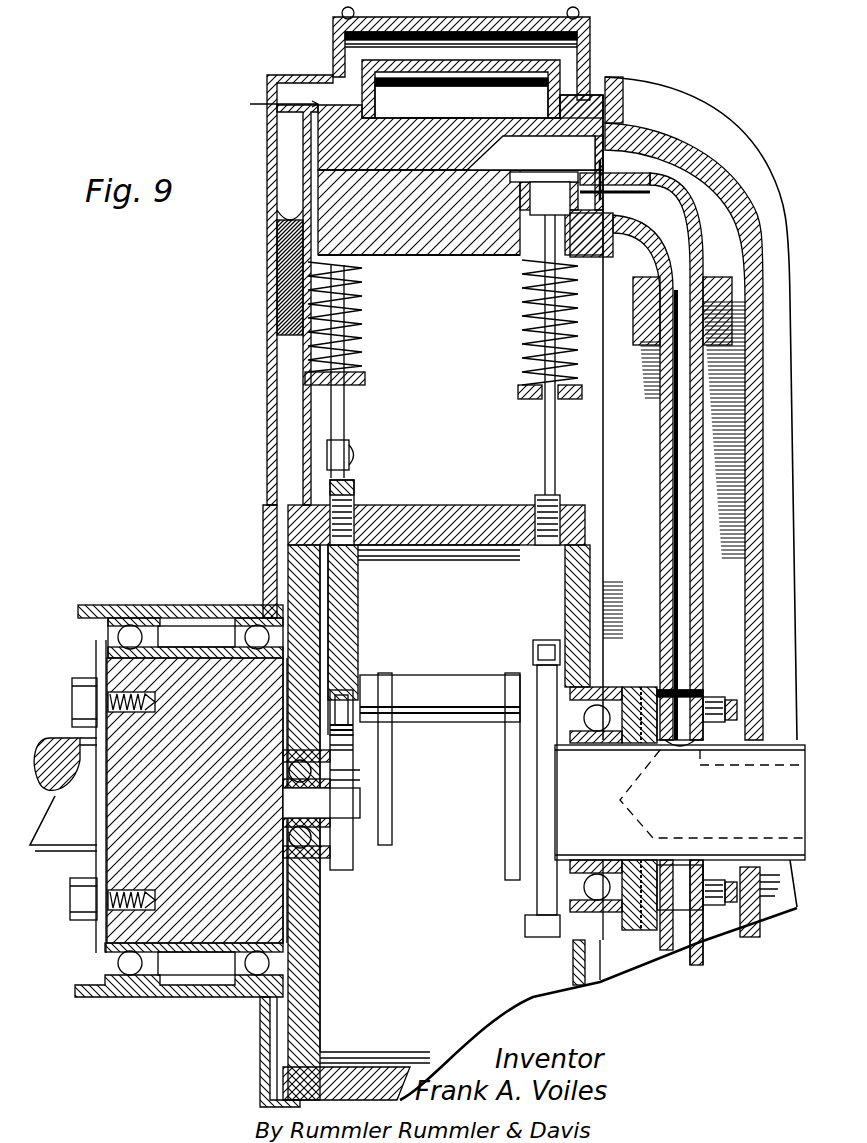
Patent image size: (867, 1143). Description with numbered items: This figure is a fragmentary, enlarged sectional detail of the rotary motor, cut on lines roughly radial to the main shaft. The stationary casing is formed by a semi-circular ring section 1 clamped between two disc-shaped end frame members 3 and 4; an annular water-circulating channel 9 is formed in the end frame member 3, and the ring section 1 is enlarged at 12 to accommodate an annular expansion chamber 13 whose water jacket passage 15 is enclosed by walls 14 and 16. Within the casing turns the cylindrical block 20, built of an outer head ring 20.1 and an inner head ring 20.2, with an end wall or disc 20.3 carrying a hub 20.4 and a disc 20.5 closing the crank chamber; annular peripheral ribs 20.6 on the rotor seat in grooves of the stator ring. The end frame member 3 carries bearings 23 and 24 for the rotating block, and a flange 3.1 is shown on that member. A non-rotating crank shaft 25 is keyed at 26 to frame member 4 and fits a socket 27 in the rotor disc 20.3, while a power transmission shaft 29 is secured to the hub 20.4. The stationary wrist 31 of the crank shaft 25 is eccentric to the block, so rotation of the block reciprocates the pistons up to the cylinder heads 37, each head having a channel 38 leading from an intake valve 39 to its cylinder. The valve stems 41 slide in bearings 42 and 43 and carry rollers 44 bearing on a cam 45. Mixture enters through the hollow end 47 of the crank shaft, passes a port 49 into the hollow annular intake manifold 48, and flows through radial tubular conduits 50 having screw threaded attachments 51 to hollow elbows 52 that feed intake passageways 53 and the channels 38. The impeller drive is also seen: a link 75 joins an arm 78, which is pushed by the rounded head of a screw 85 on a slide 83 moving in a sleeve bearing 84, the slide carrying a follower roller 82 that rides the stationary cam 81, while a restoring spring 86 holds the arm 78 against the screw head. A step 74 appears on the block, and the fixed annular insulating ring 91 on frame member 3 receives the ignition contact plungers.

The semi-circular ring section 1 is at (580, 14).
The disc-shaped end frame member 3 is at (265, 518).
The housing flange 3.1 is at (160, 606).
The disc-shaped end frame member 4 is at (735, 166).
The annular water-circulating channel 9 is at (275, 128).
The radial enlargement 12 is at (333, 48).
The annular expansion chamber 13 is at (461, 98).
The wall 14 is at (385, 62).
The water jacket passage 15 is at (578, 48).
The wall 16 is at (342, 16).
The cylindrical block 20 is at (420, 256).
The outer head ring 20.1 is at (440, 258).
The inner head ring 20.2 is at (432, 548).
The end wall or disc 20.3 is at (305, 945).
The hub 20.4 is at (152, 996).
The disc 20.5 is at (575, 960).
The annular peripheral ribs 20.6 is at (653, 82).
The bearing 23 is at (108, 640).
The bearing 24 is at (235, 637).
The non-rotating crank shaft 25 is at (318, 795).
The key 26 is at (770, 925).
The socket 27 is at (300, 858).
The power transmission shaft 29 is at (70, 858).
The wrist 31 is at (440, 690).
The cylinder head 37 is at (415, 128).
The channel 38 is at (531, 153).
The intake valve 39 is at (553, 176).
The valve stem 41 is at (545, 443).
The bearing 42 is at (522, 262).
The bearing 43 is at (535, 505).
The roller 44 is at (533, 660).
The cam 45 is at (537, 925).
The hollow end of crank shaft 47 is at (625, 826).
The hollow annular intake manifold 48 is at (712, 696).
The port 49 is at (680, 745).
The radial tubular conduit 50 is at (660, 476).
The screw threaded attachment 51 is at (633, 312).
The hollow elbow 52 is at (688, 210).
The intake passageway 53 is at (603, 186).
The rotor step 74 is at (584, 95).
The link 75 is at (337, 400).
The arm 78 is at (349, 466).
The stationary cam 81 is at (330, 860).
The follower roller 82 is at (350, 722).
The slide 83 is at (345, 598).
The sleeve bearing 84 is at (352, 692).
The screw 85 is at (354, 494).
The restoring spring 86 is at (362, 324).
The fixed annular insulating ring 91 is at (272, 290).